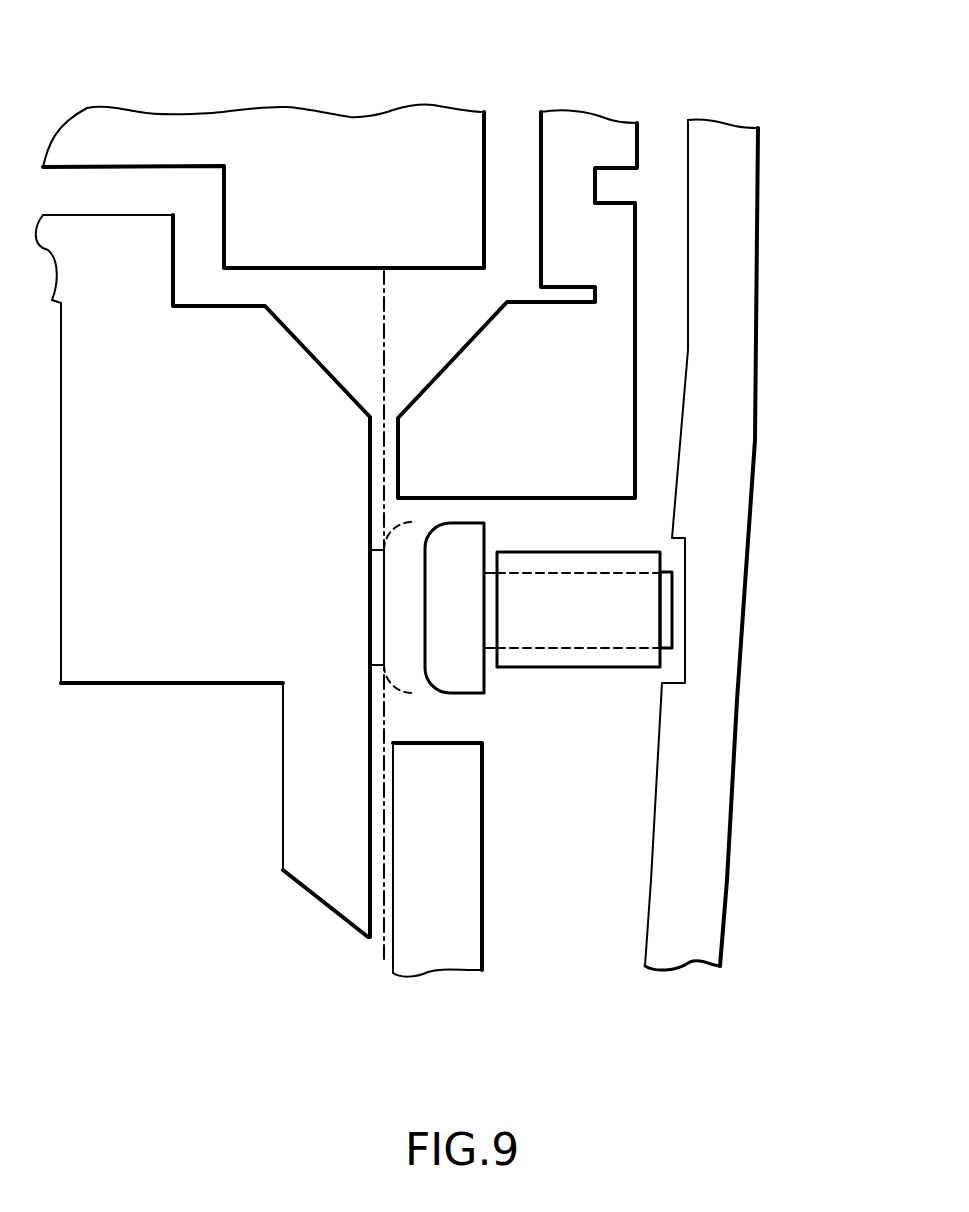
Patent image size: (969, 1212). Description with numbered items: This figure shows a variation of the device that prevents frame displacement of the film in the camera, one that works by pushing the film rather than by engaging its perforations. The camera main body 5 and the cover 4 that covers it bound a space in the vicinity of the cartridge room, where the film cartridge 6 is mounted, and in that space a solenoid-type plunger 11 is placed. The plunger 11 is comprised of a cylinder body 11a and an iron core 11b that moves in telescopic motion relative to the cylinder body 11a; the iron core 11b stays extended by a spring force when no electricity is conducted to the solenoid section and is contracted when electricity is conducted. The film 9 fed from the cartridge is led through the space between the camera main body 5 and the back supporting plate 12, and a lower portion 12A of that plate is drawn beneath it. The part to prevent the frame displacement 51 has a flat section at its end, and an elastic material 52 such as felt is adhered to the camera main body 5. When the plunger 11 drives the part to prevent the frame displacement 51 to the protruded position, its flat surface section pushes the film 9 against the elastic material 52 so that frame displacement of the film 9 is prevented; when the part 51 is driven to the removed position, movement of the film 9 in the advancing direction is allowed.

The cover 4 is at (722, 500).
The camera main body 5 is at (118, 665).
The film cartridge 6 is at (322, 138).
The film 9 is at (382, 945).
The plunger 11 is at (690, 613).
The cylinder body 11a is at (662, 655).
The iron core 11b is at (672, 620).
The back supporting plate 12 is at (620, 375).
The bracket lower portion 12A is at (482, 812).
The part to prevent the frame displacement 51 is at (470, 668).
The elastic material 52 is at (378, 651).